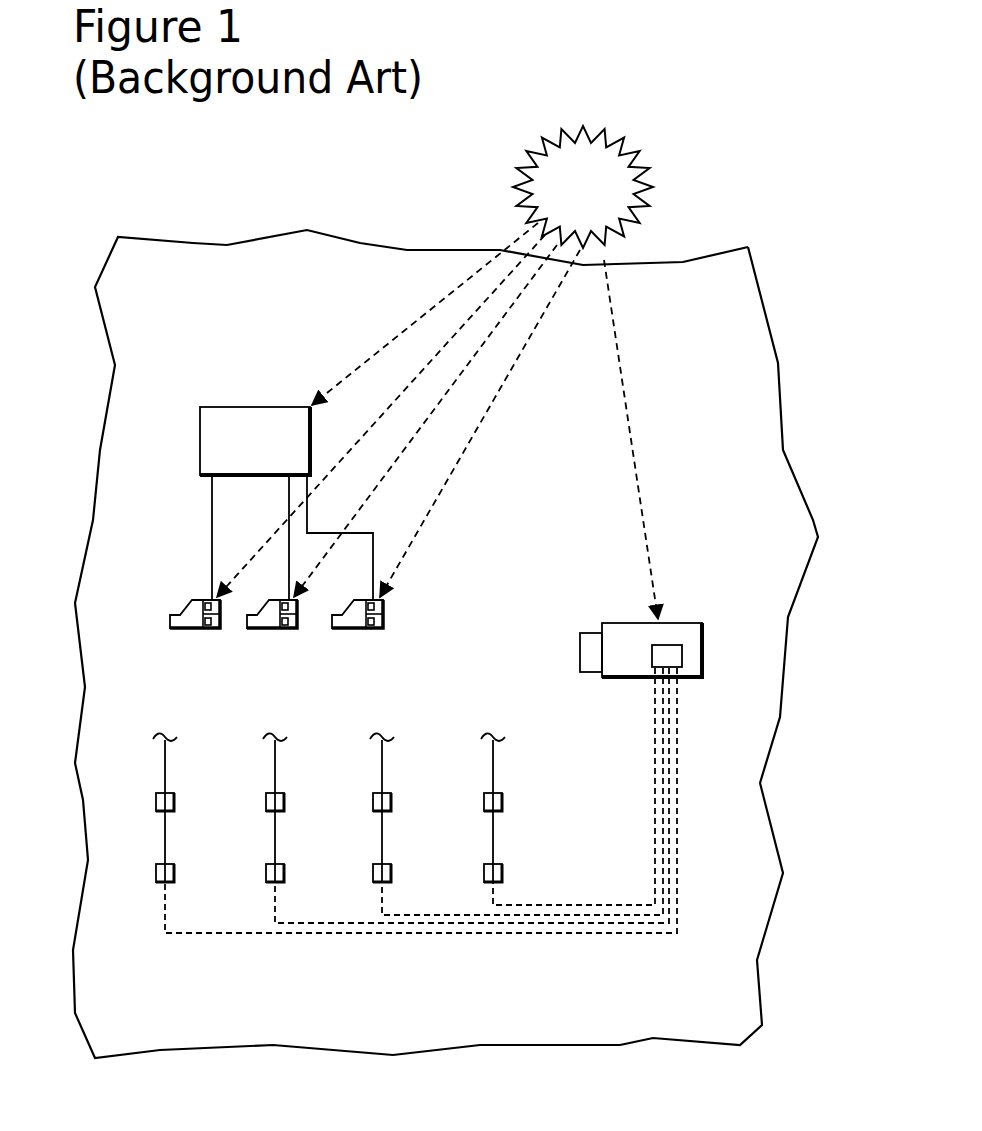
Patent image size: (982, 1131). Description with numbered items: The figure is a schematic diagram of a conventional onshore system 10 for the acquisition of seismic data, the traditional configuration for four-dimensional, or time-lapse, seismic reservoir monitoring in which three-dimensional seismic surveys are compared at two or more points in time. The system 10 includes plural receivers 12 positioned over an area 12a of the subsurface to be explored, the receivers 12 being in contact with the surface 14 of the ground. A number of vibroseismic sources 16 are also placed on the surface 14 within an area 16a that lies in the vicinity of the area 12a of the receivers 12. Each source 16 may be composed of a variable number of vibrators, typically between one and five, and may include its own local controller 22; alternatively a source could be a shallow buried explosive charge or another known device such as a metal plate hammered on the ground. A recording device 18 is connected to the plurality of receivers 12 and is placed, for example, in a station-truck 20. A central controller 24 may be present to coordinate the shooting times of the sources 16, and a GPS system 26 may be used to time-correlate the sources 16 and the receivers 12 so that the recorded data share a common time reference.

The system 10 is at (365, 169).
The receivers 12 is at (156, 800).
The area 12a is at (738, 933).
The surface 14 is at (62, 645).
The vibroseismic sources 16 is at (192, 618).
The area 16a is at (772, 467).
The recording device 18 is at (675, 655).
The station-truck 20 is at (692, 616).
The local controller 22 is at (213, 630).
The central controller 24 is at (215, 407).
The GPS system 26 is at (618, 143).